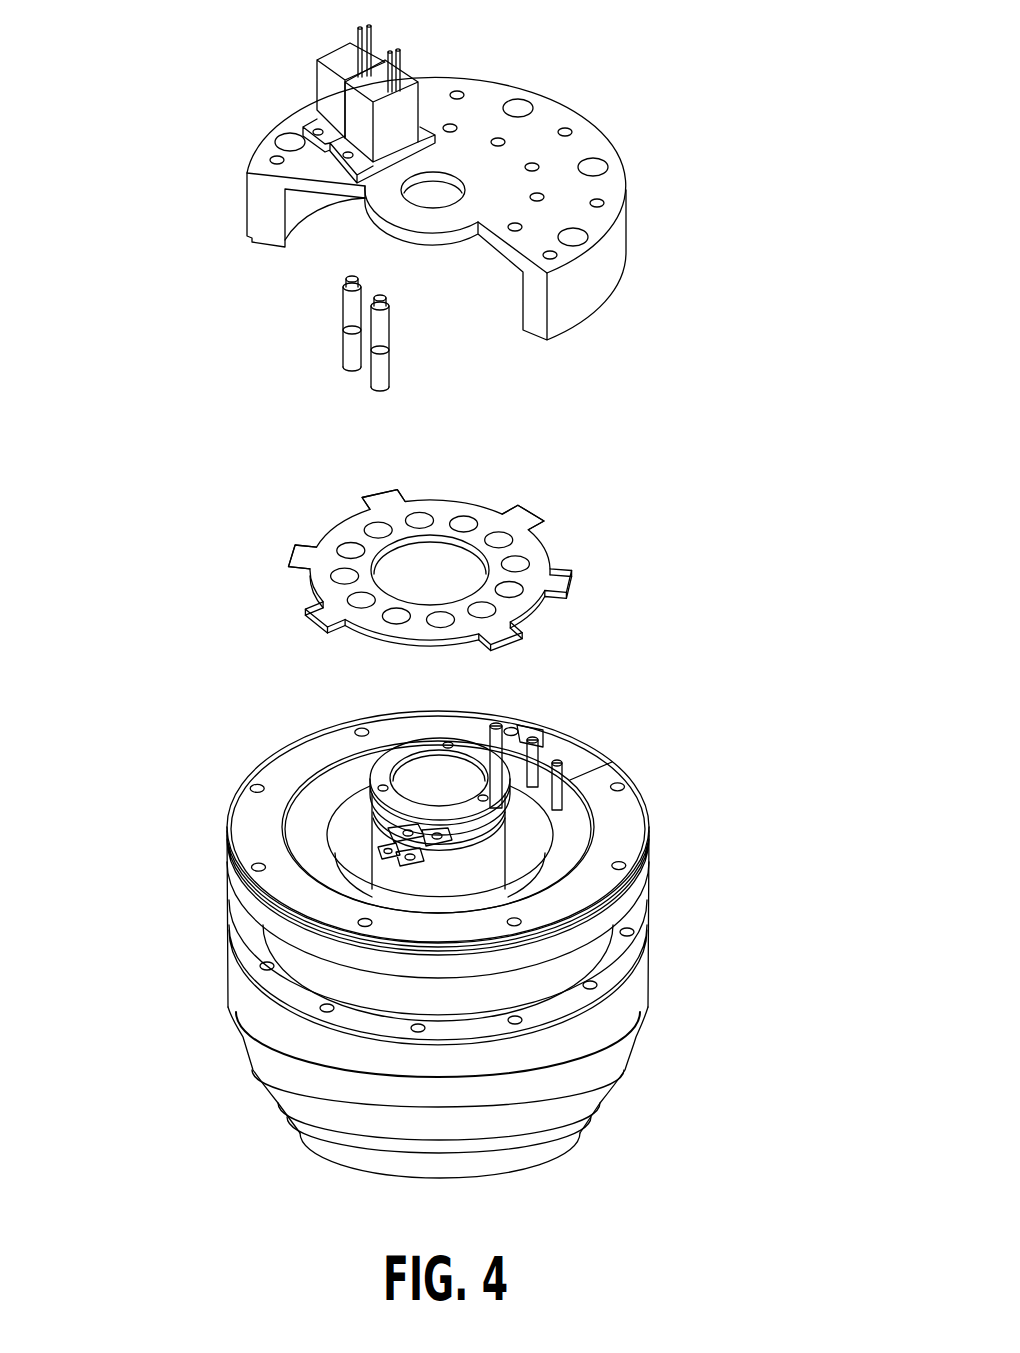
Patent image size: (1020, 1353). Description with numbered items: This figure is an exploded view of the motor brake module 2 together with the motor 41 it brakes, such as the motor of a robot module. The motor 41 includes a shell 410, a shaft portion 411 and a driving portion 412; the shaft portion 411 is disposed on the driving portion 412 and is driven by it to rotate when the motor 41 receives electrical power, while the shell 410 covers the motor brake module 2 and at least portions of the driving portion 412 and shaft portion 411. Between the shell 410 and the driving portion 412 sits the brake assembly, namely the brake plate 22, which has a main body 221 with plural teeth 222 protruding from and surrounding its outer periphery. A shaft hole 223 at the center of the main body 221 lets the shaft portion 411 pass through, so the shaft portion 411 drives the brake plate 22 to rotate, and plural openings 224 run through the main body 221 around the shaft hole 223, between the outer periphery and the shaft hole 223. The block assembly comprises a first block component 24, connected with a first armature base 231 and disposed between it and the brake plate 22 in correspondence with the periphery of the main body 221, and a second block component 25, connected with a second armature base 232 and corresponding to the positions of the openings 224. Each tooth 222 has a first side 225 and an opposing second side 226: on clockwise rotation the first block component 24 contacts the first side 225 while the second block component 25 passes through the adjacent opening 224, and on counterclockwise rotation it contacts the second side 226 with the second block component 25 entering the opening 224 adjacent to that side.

The motor brake module 2 is at (163, 358).
The shell 410 is at (573, 150).
The first armature base 231 is at (323, 92).
The second armature base 232 is at (397, 120).
The first block component 24 is at (345, 310).
The second block component 25 is at (380, 330).
The brake plate 22 is at (586, 532).
The main body 221 is at (452, 512).
The teeth 222 is at (520, 515).
The shaft hole 223 is at (405, 570).
The openings 224 is at (355, 577).
The first side 225 is at (427, 478).
The second side 226 is at (346, 509).
The motor 41 is at (680, 854).
The shaft portion 411 is at (485, 867).
The driving portion 412 is at (633, 990).